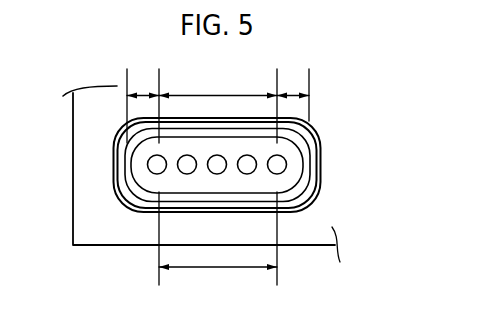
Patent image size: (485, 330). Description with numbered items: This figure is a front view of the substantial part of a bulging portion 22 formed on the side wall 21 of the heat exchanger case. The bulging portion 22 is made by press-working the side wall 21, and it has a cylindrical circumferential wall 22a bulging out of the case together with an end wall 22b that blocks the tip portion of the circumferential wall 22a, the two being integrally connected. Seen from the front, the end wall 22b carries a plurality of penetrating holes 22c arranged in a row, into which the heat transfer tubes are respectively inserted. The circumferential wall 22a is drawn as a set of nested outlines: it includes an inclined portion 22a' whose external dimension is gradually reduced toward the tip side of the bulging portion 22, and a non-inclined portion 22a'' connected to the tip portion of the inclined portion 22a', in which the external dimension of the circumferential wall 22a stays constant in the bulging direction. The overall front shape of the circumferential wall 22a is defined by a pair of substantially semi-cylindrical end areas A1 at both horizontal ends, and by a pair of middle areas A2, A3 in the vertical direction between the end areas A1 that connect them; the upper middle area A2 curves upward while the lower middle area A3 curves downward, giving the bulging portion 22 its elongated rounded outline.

The side wall 21 is at (83, 170).
The bulging portion 22 is at (320, 126).
The circumferential wall 22a is at (268, 173).
The inclined portion 22a' is at (264, 165).
The non-inclined portion 22a'' is at (273, 165).
The end wall 22b is at (280, 178).
The penetrating hole 22c is at (189, 171).
The end area A1 is at (218, 104).
The upper middle area A2 is at (218, 82).
The lower middle area A3 is at (218, 242).